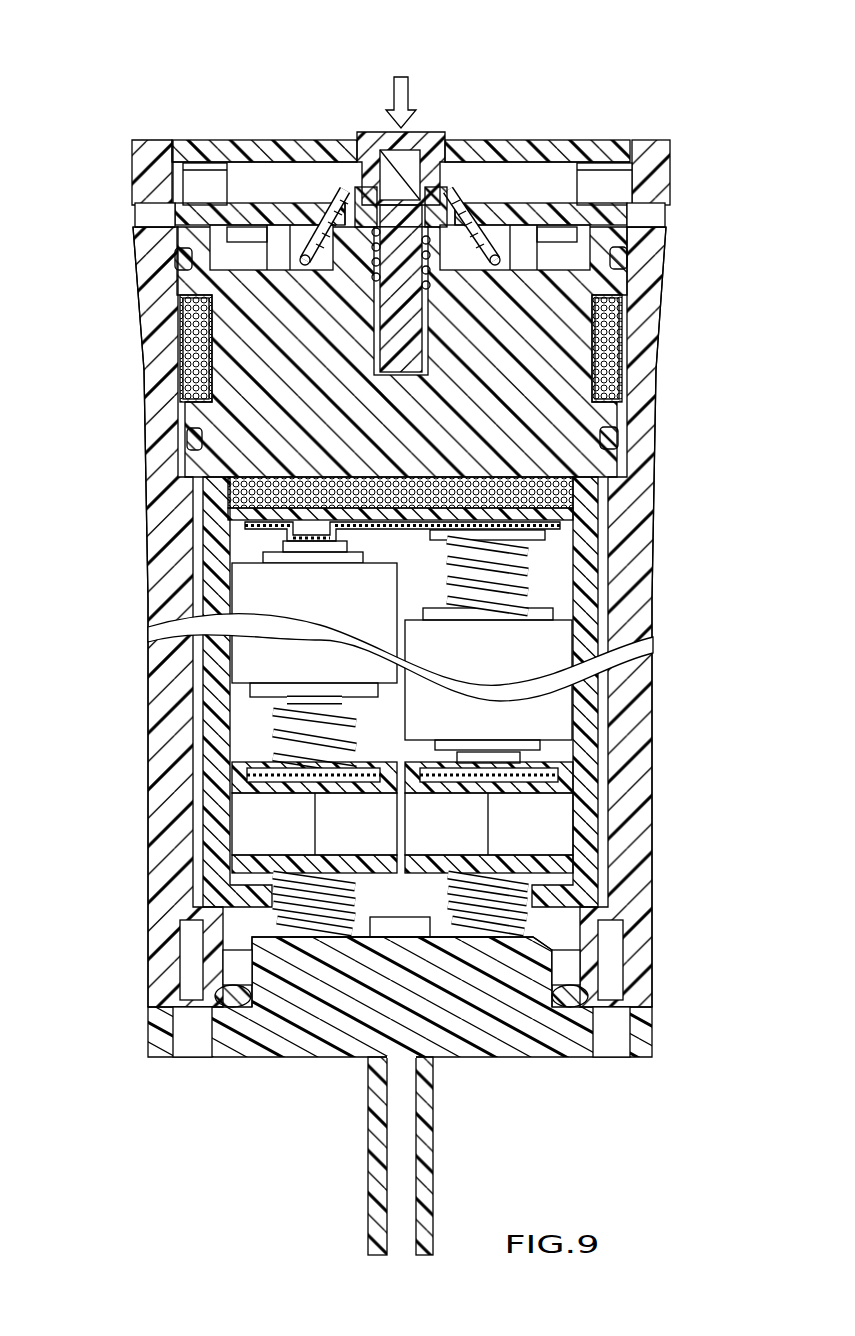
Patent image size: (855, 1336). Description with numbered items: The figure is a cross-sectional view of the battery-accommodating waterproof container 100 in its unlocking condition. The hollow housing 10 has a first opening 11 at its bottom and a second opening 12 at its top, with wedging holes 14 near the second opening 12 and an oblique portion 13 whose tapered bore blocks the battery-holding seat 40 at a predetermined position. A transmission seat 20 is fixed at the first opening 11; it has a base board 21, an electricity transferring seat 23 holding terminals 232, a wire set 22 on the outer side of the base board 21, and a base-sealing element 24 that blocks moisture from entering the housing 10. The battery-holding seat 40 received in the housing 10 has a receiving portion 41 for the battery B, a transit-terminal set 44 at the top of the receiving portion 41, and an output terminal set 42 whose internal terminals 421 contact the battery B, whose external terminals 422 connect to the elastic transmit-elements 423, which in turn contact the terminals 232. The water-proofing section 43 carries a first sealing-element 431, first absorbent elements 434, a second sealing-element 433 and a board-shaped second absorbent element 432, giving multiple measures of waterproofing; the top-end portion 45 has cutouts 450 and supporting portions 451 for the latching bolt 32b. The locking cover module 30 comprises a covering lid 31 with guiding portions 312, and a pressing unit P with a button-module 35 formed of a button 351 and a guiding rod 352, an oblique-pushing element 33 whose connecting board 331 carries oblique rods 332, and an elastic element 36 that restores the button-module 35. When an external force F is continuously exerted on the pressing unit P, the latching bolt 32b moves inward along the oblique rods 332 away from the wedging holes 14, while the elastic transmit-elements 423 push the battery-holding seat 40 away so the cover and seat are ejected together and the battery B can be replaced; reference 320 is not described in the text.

The battery-accommodating waterproof container 100 is at (704, 14).
The housing 10 is at (148, 523).
The first opening 11 is at (240, 975).
The second opening 12 is at (649, 143).
The oblique portion 13 is at (147, 330).
The wedging holes 14 is at (147, 220).
The transmission seat 20 is at (148, 1035).
The base board 21 is at (243, 1040).
The wire set 22 is at (418, 1157).
The electricity transferring seat 23 is at (538, 970).
The terminals 232 is at (500, 940).
The base-sealing element 24 is at (567, 998).
The locking cover module 30 is at (178, 132).
The covering lid 31 is at (597, 143).
The guiding portions 312 is at (480, 157).
The latching bolt 32b is at (185, 212).
The plate opening 320 is at (500, 213).
The oblique-pushing element 33 is at (250, 108).
The connecting board 331 is at (350, 187).
The oblique rods 332 is at (303, 200).
The button-module 35 is at (408, 30).
The button 351 is at (368, 132).
The guiding rod 352 is at (381, 133).
The elastic element 36 is at (200, 283).
The battery-holding seat 40 is at (600, 679).
The receiving portion 41 is at (592, 735).
The output terminal set 42 is at (277, 917).
The internal terminals 421 is at (257, 773).
The external terminals 422 is at (270, 906).
The elastic transmit-element 423 is at (530, 918).
The water-proofing section 43 is at (750, 312).
The first sealing-element 431 is at (610, 440).
The second absorbent element 432 is at (575, 493).
The second sealing-element 433 is at (640, 292).
The first absorbent elements 434 is at (610, 348).
The transit-terminal set 44 is at (532, 567).
The top-end portion 45 is at (213, 165).
The cutouts 450 is at (188, 187).
The supporting portions 451 is at (180, 260).
The battery B is at (260, 593).
The external force F is at (401, 88).
The pressing unit P is at (434, 124).